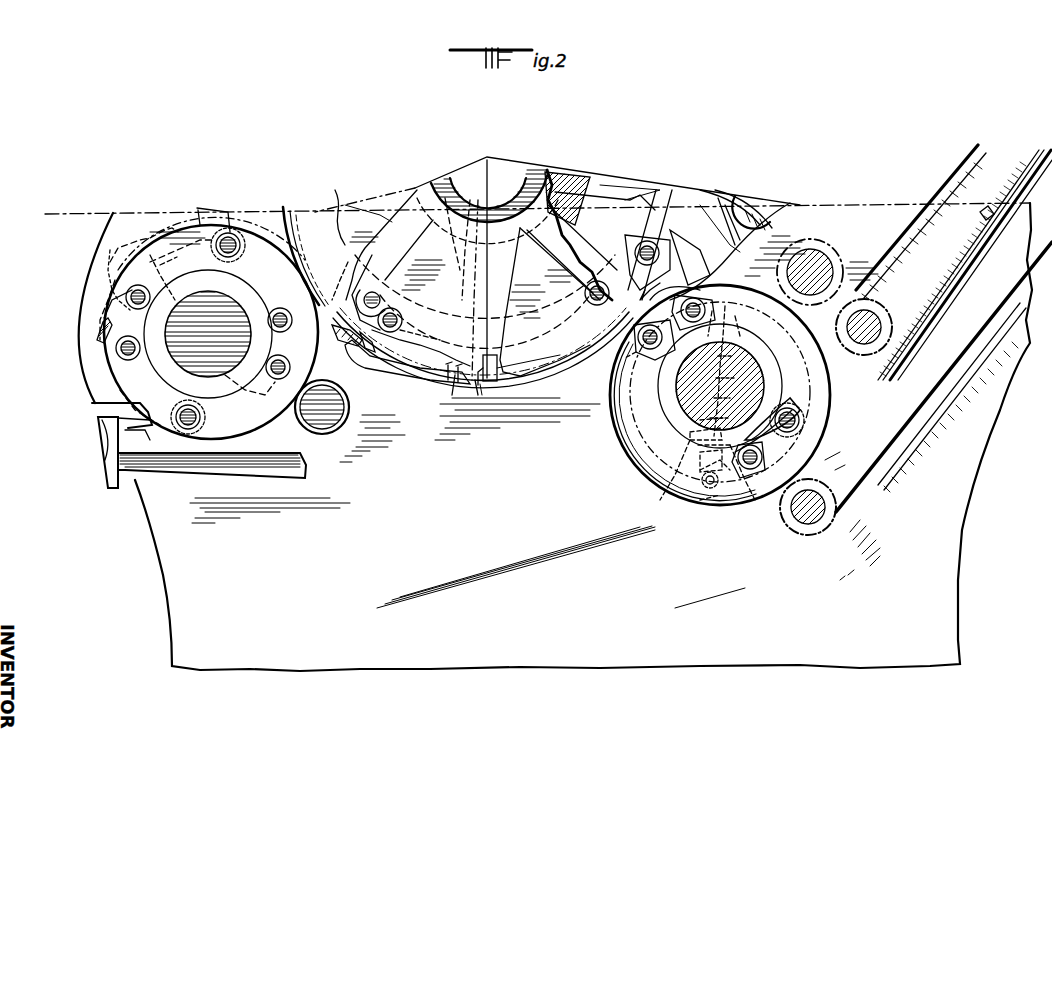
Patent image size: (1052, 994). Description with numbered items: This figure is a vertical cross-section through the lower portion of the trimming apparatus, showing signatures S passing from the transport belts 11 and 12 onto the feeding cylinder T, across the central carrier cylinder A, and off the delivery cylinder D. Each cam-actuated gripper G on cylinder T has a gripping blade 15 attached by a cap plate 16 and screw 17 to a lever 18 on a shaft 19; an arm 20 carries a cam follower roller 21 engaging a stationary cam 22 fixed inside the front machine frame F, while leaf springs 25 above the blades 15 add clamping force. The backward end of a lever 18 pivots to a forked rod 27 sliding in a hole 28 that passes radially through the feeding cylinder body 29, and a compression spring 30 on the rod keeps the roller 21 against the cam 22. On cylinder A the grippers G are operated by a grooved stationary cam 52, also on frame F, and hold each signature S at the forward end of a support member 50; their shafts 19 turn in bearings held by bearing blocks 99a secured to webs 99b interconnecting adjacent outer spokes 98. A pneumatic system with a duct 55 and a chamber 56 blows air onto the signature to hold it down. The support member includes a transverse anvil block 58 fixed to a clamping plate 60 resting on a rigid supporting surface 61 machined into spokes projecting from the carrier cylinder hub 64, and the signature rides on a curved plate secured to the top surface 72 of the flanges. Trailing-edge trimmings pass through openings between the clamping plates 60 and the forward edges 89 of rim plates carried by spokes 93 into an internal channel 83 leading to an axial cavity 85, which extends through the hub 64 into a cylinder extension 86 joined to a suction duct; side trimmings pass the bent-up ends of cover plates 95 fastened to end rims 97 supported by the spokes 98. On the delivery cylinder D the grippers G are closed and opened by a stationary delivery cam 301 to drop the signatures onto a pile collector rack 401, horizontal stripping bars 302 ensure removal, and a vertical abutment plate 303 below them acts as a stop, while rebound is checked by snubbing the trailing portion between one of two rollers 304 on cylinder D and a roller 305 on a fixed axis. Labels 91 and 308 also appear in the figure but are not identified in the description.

The transport belt 11 is at (963, 243).
The transport belt 12 is at (982, 330).
The gripping blade 15 is at (822, 458).
The cap plate 16 is at (342, 345).
The screw 17 is at (762, 510).
The lever 18 is at (722, 506).
The shaft 19 is at (752, 515).
The arm 20 is at (666, 352).
The cam follower roller 21 is at (640, 352).
The stationary cam 22 is at (805, 330).
The leaf spring 25 is at (362, 350).
The forked rod 27 is at (690, 470).
The hole 28 is at (690, 432).
The feeding cylinder body 29 is at (766, 372).
The compression spring 30 is at (698, 456).
The support member 50 is at (608, 417).
The stationary cam 52 is at (325, 210).
The duct 55 is at (756, 200).
The chamber 56 is at (796, 195).
The transverse anvil block 58 is at (500, 376).
The clamping plate 60 is at (488, 382).
The rigid supporting surface 61 is at (502, 360).
The carrier cylinder hub 64 is at (585, 195).
The top surface 72 is at (573, 338).
The internal channel 83 is at (468, 268).
The axial cavity 85 is at (488, 204).
The cylinder extension 86 is at (520, 175).
The forward edge 89 is at (477, 396).
The pin 91 is at (456, 384).
The spoke 93 is at (472, 310).
The cover plate 95 is at (548, 370).
The end rim 97 is at (556, 340).
The outer spoke 98 is at (392, 238).
The bearing block 99a is at (428, 365).
The web 99b is at (448, 382).
The stationary delivery cam 301 is at (150, 372).
The horizontal stripping bar 302 is at (250, 470).
The vertical abutment plate 303 is at (106, 440).
The roller 304 is at (165, 422).
The roller 305 is at (342, 435).
The bolt boss 308 is at (250, 428).
The pile collector rack 401 is at (206, 470).
The central carrier cylinder A is at (498, 432).
The delivery cylinder D is at (234, 522).
The front machine frame F is at (925, 582).
The cam-actuated gripper G is at (85, 339).
The signature S is at (612, 418).
The feeding cylinder T is at (720, 522).